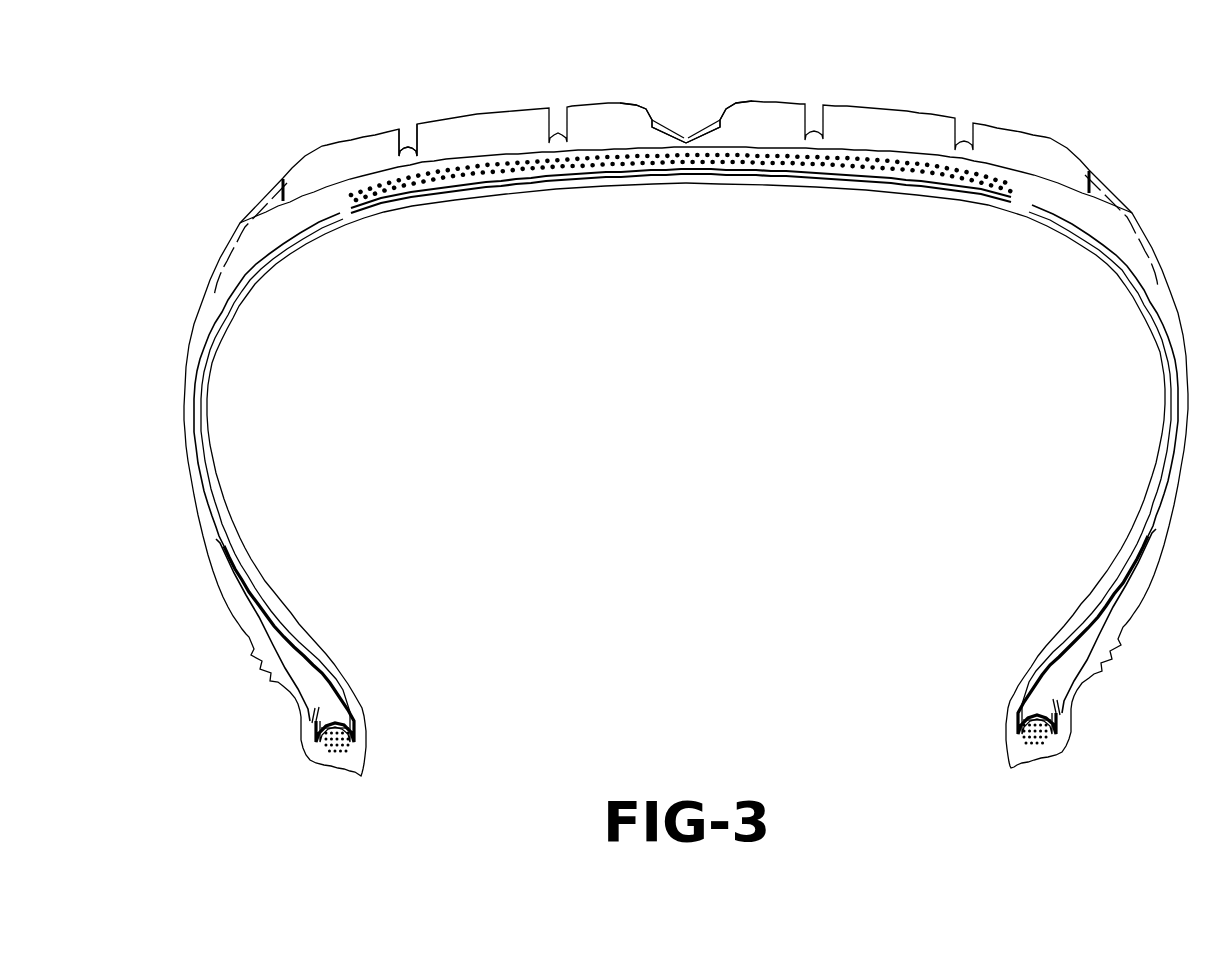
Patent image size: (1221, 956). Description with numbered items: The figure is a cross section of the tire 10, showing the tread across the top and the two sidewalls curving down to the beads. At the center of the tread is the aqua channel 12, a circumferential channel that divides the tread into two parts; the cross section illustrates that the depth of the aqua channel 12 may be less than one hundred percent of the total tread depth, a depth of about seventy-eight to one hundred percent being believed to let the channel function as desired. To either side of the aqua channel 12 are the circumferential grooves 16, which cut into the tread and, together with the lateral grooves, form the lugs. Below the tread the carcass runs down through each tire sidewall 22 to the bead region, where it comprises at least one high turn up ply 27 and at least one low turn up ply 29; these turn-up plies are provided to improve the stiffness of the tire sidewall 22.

The tire 10 is at (190, 790).
The aqua channel 12 is at (686, 142).
The circumferential grooves 16 is at (408, 158).
The tire sidewall 22 is at (186, 406).
The high turn up ply 27 is at (249, 586).
The low turn up ply 29 is at (324, 713).